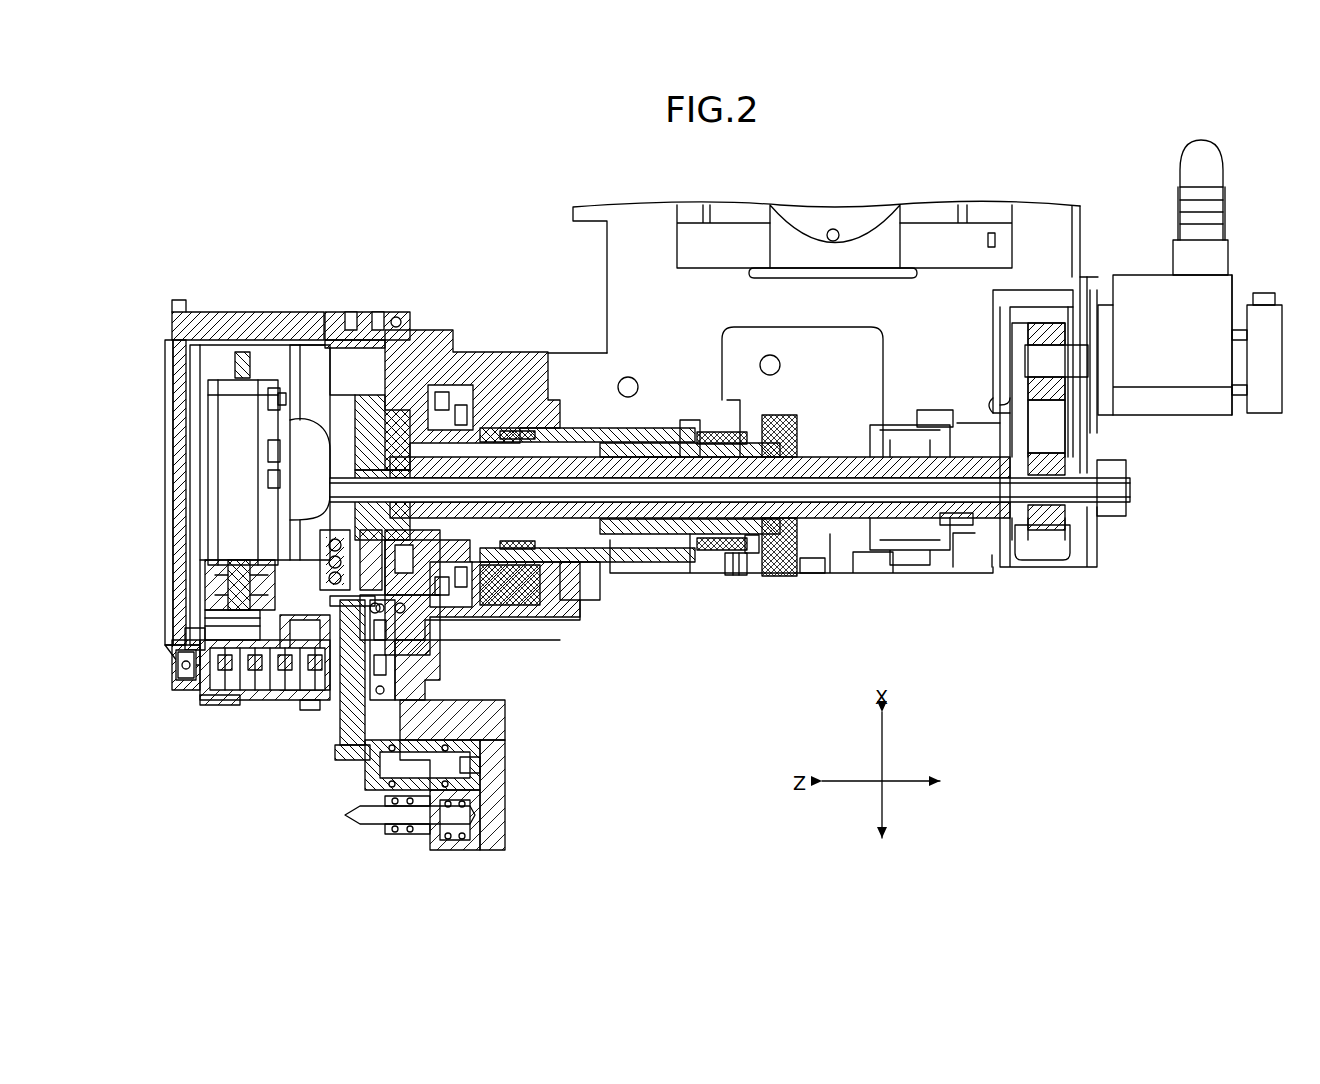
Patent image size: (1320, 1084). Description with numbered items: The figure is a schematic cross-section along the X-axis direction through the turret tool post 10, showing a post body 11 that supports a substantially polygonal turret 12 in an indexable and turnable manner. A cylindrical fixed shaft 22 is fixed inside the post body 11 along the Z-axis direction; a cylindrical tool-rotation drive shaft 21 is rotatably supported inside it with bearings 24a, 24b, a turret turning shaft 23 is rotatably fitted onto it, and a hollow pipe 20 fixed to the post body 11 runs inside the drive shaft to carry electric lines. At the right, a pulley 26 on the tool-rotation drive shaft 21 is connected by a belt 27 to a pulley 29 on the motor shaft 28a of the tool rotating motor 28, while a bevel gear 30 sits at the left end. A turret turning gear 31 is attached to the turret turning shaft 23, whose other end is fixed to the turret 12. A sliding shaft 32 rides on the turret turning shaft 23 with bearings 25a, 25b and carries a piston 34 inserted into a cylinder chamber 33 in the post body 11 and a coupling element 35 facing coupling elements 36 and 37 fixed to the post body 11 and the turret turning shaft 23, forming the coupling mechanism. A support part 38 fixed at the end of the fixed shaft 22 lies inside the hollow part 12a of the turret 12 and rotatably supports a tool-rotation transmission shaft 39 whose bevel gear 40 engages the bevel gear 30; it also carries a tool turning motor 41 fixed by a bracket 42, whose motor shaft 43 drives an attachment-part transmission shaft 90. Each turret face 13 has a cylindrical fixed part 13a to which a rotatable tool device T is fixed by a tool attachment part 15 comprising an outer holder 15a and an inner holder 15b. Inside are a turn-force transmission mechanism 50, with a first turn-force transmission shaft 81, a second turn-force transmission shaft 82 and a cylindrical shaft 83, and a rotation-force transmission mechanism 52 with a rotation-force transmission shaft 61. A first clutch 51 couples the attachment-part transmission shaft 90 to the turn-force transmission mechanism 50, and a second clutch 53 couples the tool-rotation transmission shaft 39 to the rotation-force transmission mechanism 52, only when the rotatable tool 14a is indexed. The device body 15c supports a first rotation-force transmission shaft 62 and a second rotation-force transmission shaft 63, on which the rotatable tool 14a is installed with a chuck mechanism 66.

The turret tool post 10 is at (500, 305).
The post body 11 is at (545, 352).
The turret 12 is at (236, 310).
The hollow part 12a is at (340, 372).
The turret face 13 is at (185, 684).
The fixed part 13a is at (432, 666).
The rotatable tool 14a is at (377, 826).
The tool attachment part 15 is at (233, 705).
The outer holder 15a is at (210, 705).
The inner holder 15b is at (415, 716).
The device body 15c is at (438, 720).
The pipe 20 is at (1128, 487).
The tool-rotation drive shaft 21 is at (1010, 560).
The fixed shaft 22 is at (845, 537).
The turret turning shaft 23 is at (673, 535).
The bearing 24a is at (435, 535).
The bearing 24b is at (973, 522).
The bearing 25a is at (574, 583).
The bearing 25b is at (746, 545).
The pulley 26 is at (1045, 535).
The belt 27 is at (1065, 425).
The tool rotating motor 28 is at (1180, 395).
The motor shaft 28a is at (1062, 335).
The pulley 29 is at (1042, 315).
The bevel gear 30 is at (378, 455).
The turret turning gear 31 is at (780, 558).
The sliding shaft 32 is at (585, 420).
The cylinder chamber 33 is at (478, 440).
The piston 34 is at (525, 400).
The coupling element 35 is at (542, 578).
The coupling element 36 is at (441, 393).
The coupling element 37 is at (488, 572).
The support part 38 is at (293, 428).
The tool-rotation transmission shaft 39 is at (380, 597).
The bevel gear 40 is at (405, 582).
The tool turning motor 41 is at (228, 428).
The bracket 42 is at (297, 420).
The motor shaft 43 is at (205, 595).
The turn-force transmission mechanism 50 is at (213, 690).
The first clutch 51 is at (192, 634).
The rotation-force transmission mechanism 52 is at (333, 688).
The second clutch 53 is at (330, 604).
The rotation-force transmission shaft 61 is at (352, 735).
The first rotation-force transmission shaft 62 is at (492, 766).
The second rotation-force transmission shaft 63 is at (492, 818).
The chuck mechanism 66 is at (392, 835).
The first turn-force transmission shaft 81 is at (178, 661).
The second turn-force transmission shaft 82 is at (276, 694).
The cylindrical shaft 83 is at (412, 641).
The attachment-part transmission shaft 90 is at (212, 617).
The rotatable tool device T is at (508, 768).